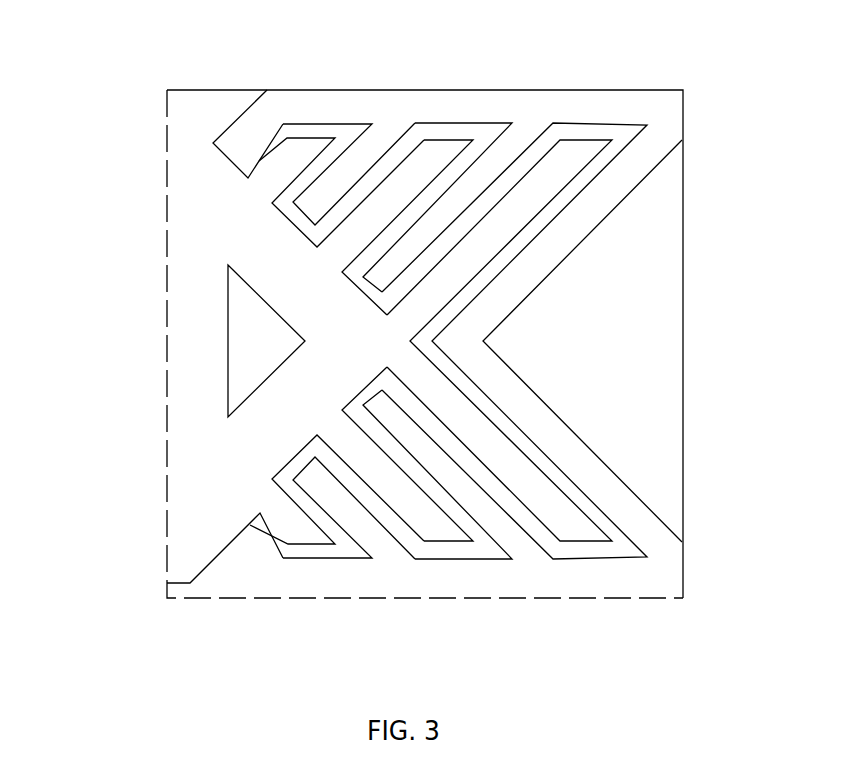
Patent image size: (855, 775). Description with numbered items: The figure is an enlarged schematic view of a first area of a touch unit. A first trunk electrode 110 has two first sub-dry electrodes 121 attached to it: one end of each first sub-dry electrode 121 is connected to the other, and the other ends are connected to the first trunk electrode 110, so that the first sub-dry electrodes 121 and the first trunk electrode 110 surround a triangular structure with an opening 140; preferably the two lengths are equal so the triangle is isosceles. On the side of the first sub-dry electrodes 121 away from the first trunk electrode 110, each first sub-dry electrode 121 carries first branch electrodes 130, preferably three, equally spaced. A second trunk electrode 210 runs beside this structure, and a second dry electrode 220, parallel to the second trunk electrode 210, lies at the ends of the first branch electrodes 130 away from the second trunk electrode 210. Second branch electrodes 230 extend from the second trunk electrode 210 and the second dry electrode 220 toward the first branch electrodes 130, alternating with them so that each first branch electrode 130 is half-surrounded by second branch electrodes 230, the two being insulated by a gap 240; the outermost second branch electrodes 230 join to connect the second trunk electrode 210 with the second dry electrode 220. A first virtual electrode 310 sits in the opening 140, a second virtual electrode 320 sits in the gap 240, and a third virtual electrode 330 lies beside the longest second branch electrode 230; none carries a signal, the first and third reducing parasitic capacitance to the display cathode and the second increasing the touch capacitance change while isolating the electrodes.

The first trunk electrode 110 is at (187, 290).
The first sub-dry electrode 121 is at (260, 268).
The first branch electrode 130 is at (268, 168).
The opening 140 is at (228, 346).
The second trunk electrode 210 is at (425, 585).
The second dry electrode 220 is at (370, 107).
The second branch electrode 230 is at (352, 163).
The gap 240 is at (447, 123).
The first virtual electrode 310 is at (255, 363).
The second virtual electrode 320 is at (590, 133).
The third virtual electrode 330 is at (653, 377).